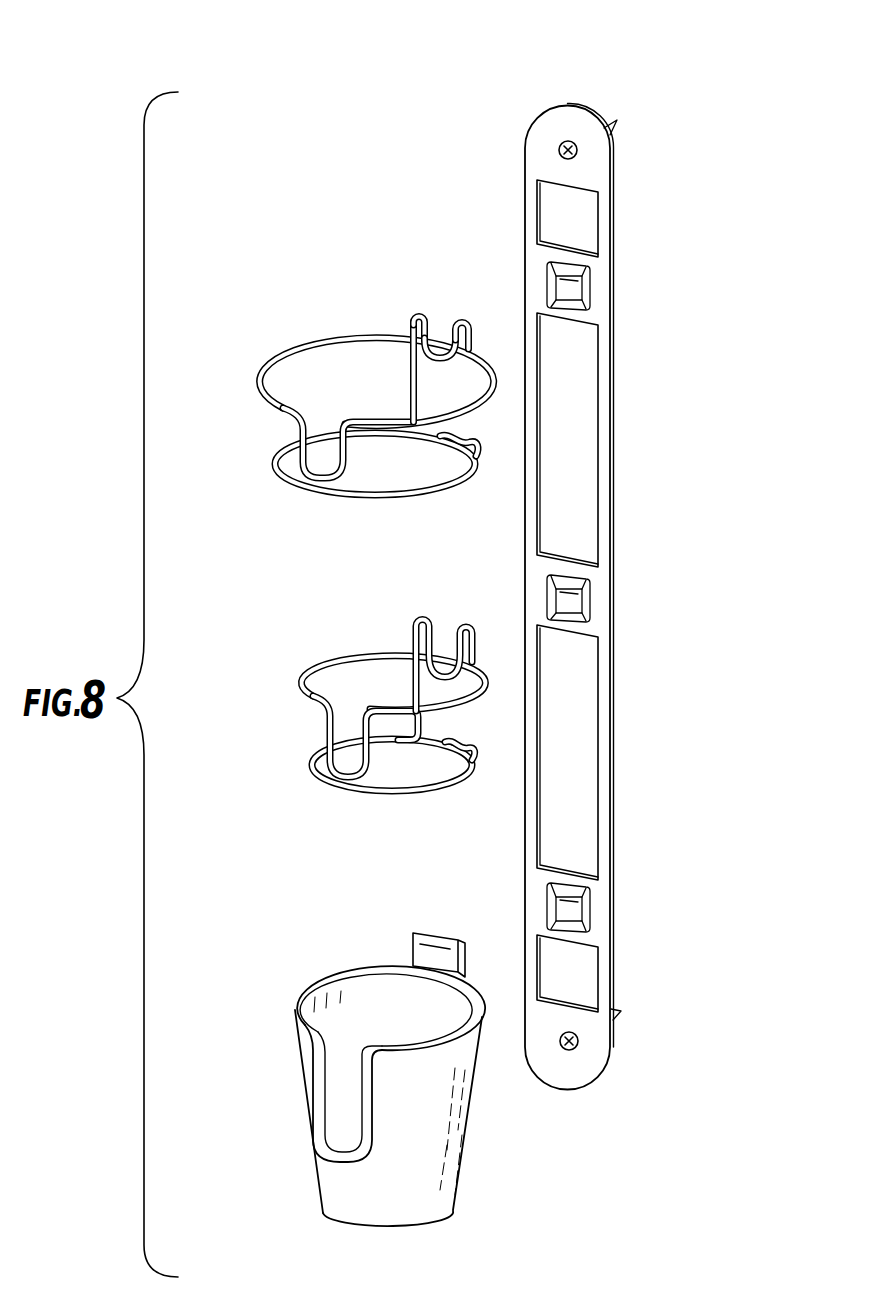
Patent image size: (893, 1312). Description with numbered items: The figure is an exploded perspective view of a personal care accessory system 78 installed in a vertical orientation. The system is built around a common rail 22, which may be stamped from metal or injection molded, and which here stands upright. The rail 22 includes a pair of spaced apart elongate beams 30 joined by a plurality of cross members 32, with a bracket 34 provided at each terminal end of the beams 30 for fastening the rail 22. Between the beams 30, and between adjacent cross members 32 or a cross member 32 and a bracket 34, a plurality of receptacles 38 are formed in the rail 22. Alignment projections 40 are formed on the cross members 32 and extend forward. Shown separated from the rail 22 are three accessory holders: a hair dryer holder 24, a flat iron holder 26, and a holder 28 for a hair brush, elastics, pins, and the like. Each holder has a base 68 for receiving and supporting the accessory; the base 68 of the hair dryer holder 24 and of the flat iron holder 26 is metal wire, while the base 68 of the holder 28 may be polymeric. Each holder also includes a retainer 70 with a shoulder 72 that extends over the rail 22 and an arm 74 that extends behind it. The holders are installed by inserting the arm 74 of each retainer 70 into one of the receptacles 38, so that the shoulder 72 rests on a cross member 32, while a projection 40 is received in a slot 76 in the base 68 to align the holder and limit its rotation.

The personal care accessory system 78 is at (712, 64).
The rail 22 is at (604, 406).
The elongate beams 30 is at (612, 766).
The bracket 34 is at (530, 128).
The receptacles 38 is at (543, 820).
The alignment projections 40 is at (590, 282).
The cross members 32 is at (598, 598).
The hair dryer holder 24 is at (263, 410).
The base 68 is at (292, 480).
The retainer 70 is at (406, 318).
The shoulder 72 is at (416, 310).
The arm 74 is at (440, 350).
The slot 76 is at (410, 400).
The flat iron holder 26 is at (298, 713).
The holder 28 is at (334, 1224).